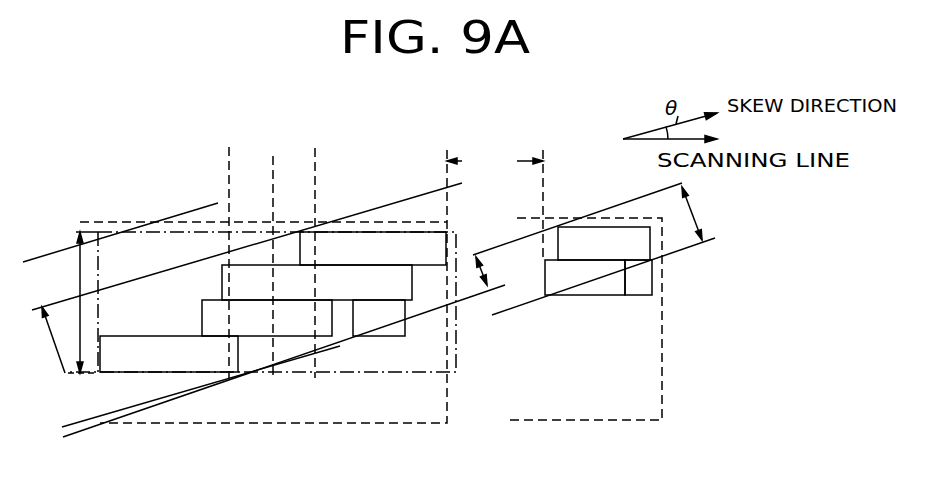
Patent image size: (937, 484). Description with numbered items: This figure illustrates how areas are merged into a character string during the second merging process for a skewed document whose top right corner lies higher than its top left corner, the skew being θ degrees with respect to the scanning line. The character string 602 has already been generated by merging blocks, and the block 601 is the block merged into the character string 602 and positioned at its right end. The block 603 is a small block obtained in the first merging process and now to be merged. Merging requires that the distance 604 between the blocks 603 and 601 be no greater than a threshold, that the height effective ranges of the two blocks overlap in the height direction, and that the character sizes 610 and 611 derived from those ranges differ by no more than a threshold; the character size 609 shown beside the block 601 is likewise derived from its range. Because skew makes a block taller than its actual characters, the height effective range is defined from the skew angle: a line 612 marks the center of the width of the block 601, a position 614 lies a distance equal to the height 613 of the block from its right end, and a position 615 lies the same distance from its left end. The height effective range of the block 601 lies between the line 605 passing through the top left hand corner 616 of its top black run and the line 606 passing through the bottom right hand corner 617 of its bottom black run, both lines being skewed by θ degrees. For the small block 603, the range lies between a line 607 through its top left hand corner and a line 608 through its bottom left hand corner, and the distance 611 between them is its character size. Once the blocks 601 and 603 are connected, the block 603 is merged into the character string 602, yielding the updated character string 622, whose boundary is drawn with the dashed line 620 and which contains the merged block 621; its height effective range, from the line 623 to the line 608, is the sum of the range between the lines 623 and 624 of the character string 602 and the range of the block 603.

The block 601 is at (190, 233).
The character string 602 is at (430, 424).
The block 603 is at (640, 296).
The distance 604 is at (495, 161).
The line 605 is at (462, 183).
The line 606 is at (472, 297).
The line 607 is at (686, 180).
The line 608 is at (693, 248).
The character size 609 is at (481, 272).
The character size 610 is at (81, 421).
The distance 611 is at (699, 210).
The line 612 is at (273, 156).
The height 613 is at (78, 252).
The position 614 is at (315, 170).
The position 615 is at (229, 147).
The top left hand corner 616 is at (305, 232).
The bottom right hand corner 617 is at (240, 373).
The boundary line 620 is at (545, 225).
The image block 621 is at (545, 297).
The updated character string 622 is at (648, 421).
The line 623 is at (45, 255).
The line 624 is at (88, 430).